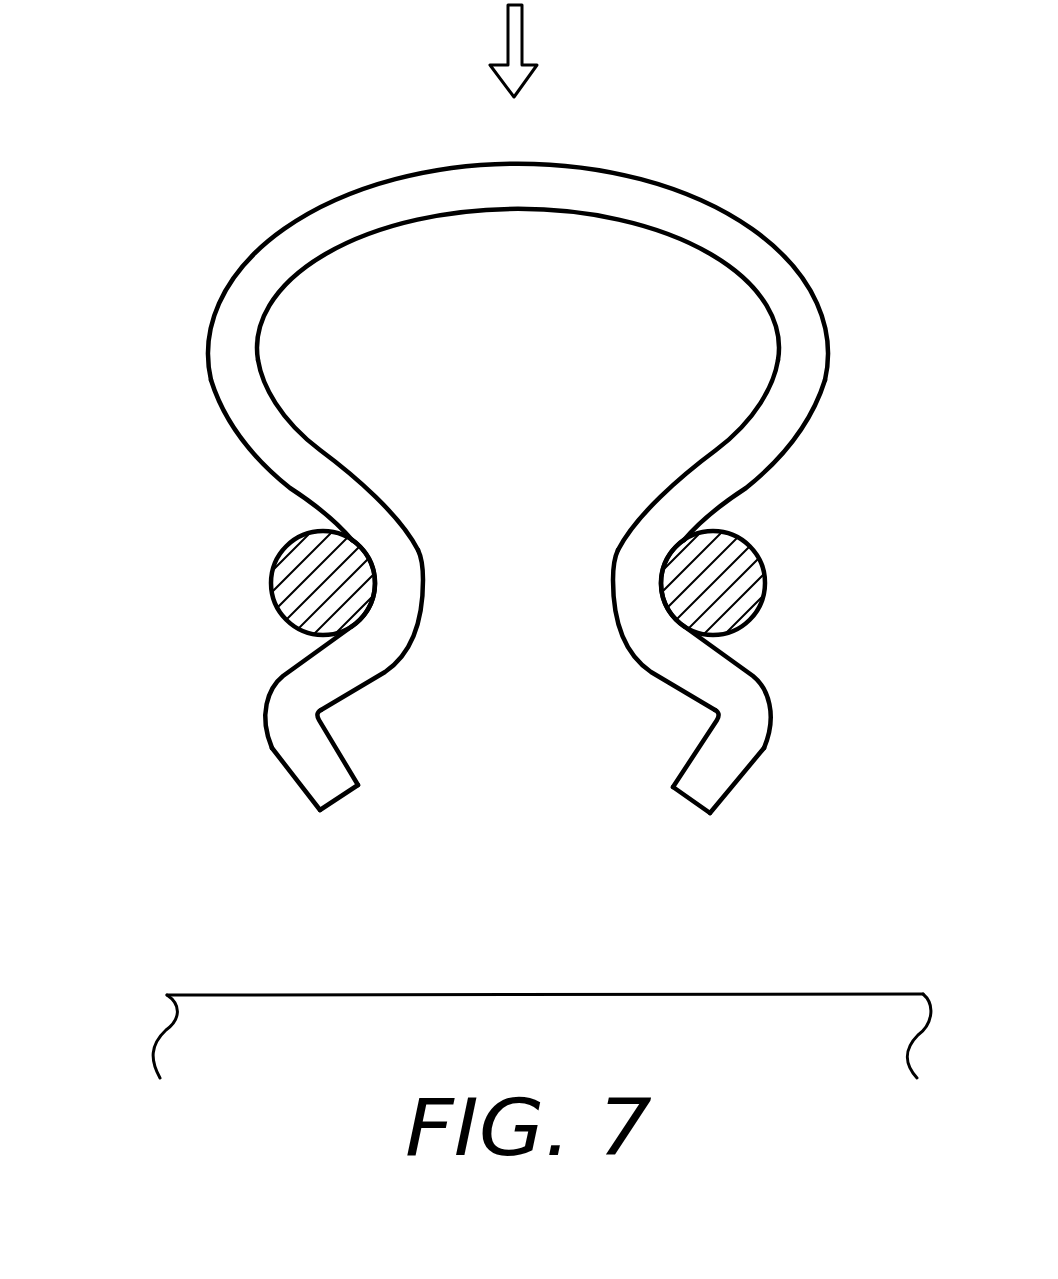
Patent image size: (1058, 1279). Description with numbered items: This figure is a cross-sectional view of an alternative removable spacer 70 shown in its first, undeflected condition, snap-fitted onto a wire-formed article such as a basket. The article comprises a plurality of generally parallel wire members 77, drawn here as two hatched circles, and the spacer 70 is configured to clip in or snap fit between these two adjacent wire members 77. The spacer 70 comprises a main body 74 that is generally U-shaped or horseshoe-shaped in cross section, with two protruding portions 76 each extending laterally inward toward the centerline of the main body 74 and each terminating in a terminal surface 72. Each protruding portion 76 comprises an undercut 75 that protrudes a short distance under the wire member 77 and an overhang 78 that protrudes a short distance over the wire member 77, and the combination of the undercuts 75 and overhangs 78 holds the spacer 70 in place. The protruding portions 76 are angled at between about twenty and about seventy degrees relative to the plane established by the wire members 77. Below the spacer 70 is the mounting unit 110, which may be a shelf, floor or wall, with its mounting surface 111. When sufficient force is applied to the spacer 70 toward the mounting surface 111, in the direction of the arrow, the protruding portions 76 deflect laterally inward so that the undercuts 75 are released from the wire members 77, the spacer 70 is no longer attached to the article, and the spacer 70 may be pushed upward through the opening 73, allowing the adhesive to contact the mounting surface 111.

The removable spacer 70 is at (233, 183).
The terminal surface 72 is at (316, 815).
The opening 73 is at (517, 582).
The main body 74 is at (632, 185).
The undercut 75 is at (313, 670).
The protruding portion 76 is at (310, 770).
The wire member 77 is at (292, 581).
The overhang 78 is at (298, 473).
The mounting unit 110 is at (178, 1042).
The mounting surface 111 is at (203, 995).